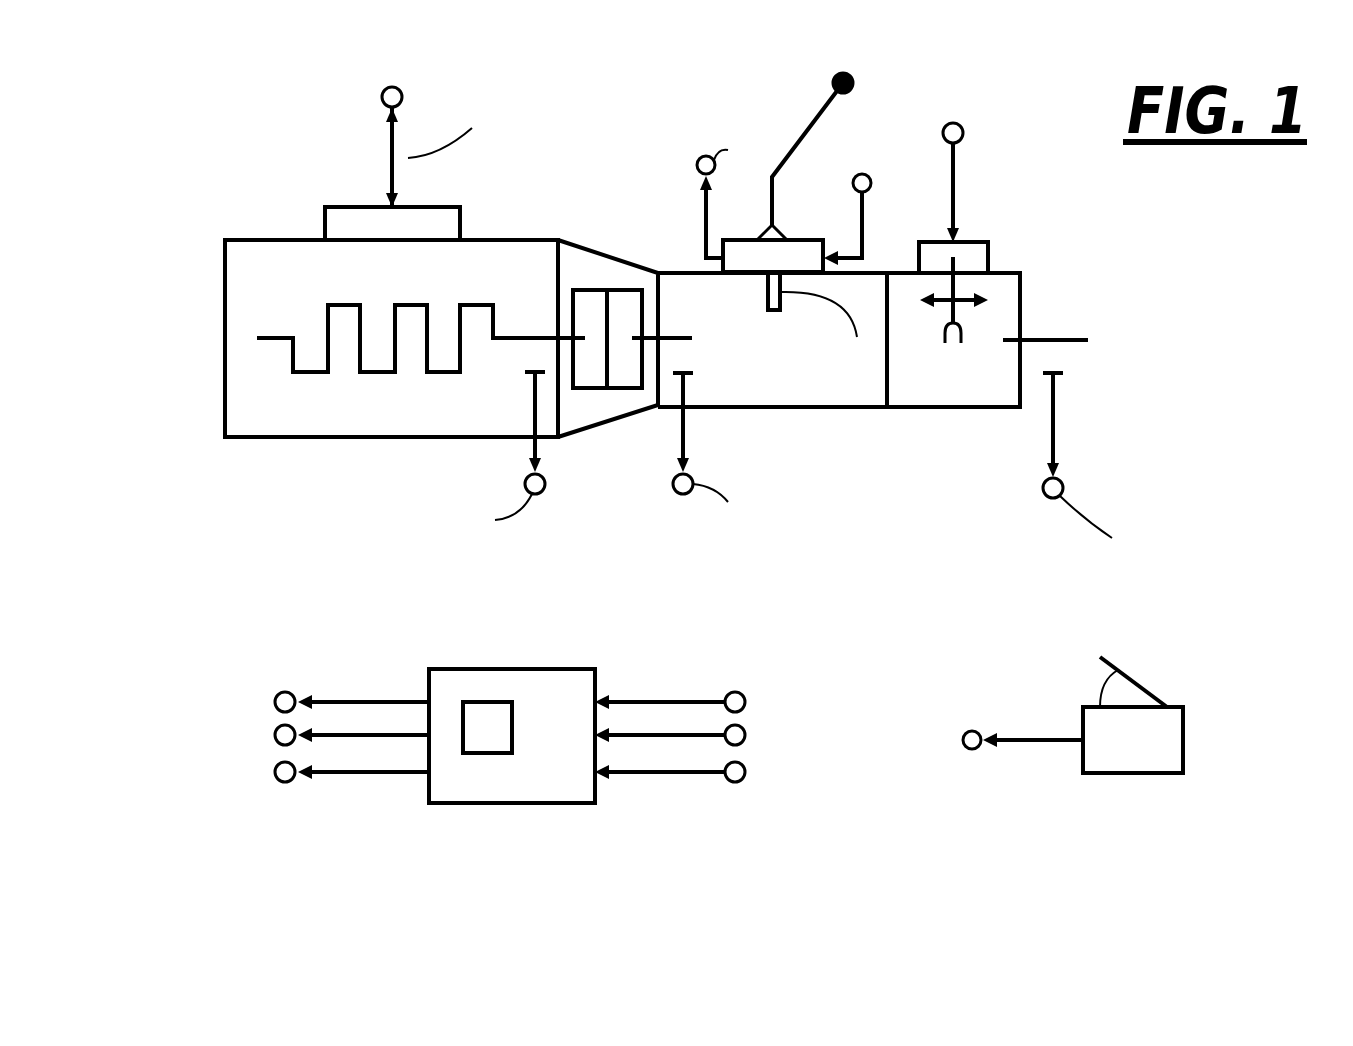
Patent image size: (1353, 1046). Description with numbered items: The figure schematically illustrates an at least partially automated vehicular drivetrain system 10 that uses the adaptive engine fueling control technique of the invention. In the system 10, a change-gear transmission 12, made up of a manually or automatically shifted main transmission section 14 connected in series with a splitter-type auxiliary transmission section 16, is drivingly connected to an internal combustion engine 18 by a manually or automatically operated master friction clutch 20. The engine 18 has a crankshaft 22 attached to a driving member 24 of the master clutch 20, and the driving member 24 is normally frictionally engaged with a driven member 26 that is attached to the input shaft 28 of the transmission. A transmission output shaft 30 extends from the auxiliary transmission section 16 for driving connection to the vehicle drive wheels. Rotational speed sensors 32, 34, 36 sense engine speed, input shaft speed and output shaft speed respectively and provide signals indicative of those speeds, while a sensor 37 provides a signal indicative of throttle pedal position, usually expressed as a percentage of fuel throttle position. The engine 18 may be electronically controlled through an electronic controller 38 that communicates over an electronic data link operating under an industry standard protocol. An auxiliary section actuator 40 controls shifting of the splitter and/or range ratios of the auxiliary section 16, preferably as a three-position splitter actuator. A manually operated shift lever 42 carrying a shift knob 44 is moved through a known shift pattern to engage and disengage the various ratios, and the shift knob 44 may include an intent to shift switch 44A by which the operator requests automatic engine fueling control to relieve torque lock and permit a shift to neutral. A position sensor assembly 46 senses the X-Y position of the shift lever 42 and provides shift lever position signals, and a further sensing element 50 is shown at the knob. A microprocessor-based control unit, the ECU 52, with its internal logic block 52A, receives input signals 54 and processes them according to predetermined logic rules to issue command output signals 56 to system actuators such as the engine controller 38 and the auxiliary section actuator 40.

The vehicular drivetrain system 10 is at (215, 100).
The change-gear transmission 12 is at (871, 518).
The main transmission section 14 is at (805, 390).
The auxiliary transmission section 16 is at (970, 390).
The internal combustion engine 18 is at (293, 405).
The master friction clutch 20 is at (592, 273).
The crankshaft 22 is at (525, 337).
The driving member 24 is at (592, 372).
The driven member 26 is at (623, 372).
The input shaft 28 is at (673, 337).
The transmission output shaft 30 is at (1055, 328).
The engine rotational speed sensor 32 is at (528, 400).
The input shaft rotational speed sensor 34 is at (687, 430).
The output shaft rotational speed sensor 36 is at (1058, 440).
The throttle pedal position sensor 37 is at (1117, 740).
The electronic controller 38 is at (360, 223).
The auxiliary section actuator 40 is at (972, 258).
The shift lever 42 is at (790, 152).
The shift knob 44 is at (833, 80).
The intent to shift switch 44A is at (858, 78).
The position sensor assembly 46 is at (748, 258).
The intent-to-shift switch 50 is at (848, 95).
The ECU 52 is at (495, 785).
The controller logic unit 52A is at (497, 718).
The input signals 54 is at (675, 830).
The command output signals 56 is at (380, 815).